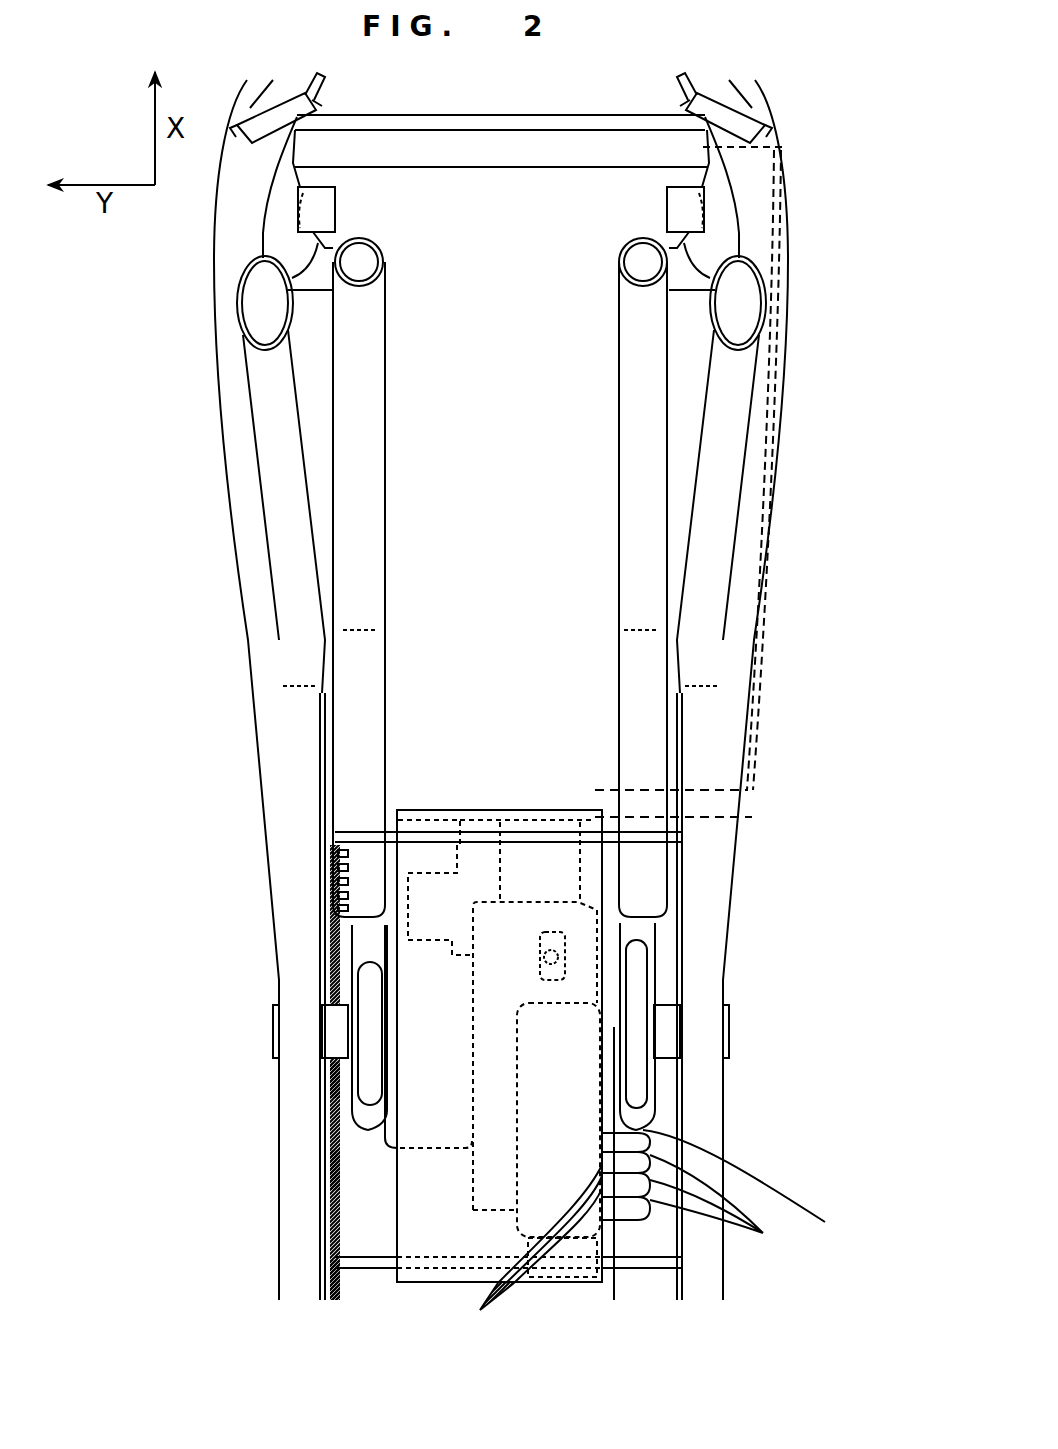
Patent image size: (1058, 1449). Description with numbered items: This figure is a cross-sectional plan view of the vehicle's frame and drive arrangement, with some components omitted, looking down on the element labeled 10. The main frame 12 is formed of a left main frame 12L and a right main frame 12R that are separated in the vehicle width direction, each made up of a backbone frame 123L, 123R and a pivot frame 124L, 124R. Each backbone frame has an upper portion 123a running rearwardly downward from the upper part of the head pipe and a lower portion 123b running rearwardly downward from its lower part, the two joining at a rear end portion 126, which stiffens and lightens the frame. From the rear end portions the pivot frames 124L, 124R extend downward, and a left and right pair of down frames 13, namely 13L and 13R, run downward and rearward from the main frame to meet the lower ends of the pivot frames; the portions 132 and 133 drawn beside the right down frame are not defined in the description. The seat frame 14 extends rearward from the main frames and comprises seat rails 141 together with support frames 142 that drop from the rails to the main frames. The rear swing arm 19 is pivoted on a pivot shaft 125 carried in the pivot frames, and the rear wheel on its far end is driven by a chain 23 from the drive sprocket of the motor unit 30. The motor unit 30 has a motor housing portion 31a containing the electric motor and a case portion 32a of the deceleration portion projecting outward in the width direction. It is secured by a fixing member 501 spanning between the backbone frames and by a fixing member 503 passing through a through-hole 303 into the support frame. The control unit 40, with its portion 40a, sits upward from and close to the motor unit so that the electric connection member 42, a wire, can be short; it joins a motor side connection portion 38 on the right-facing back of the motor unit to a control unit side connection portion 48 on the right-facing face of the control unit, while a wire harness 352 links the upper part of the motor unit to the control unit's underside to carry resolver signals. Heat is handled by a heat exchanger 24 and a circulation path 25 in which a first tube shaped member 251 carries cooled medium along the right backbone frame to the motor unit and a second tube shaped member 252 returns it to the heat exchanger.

The vehicle / steering device 10 is at (808, 140).
The main frame 12 is at (808, 302).
The main frame 12L is at (208, 304).
The main frame 12R is at (798, 377).
The down frames 13 is at (590, 577).
The down frame 13L is at (386, 340).
The down frame 13R is at (620, 340).
The seat frame 14 is at (421, 1072).
The rear swing arm 19 is at (332, 1168).
The chain 23 is at (330, 1288).
The heat exchanger 24 is at (525, 114).
The circulation path 25 is at (720, 483).
The motor unit 30 is at (566, 1004).
The motor housing portion 31a is at (492, 905).
The case portion 32a is at (423, 818).
The motor side connection portion 38 is at (728, 1184).
The control unit 40 is at (393, 1296).
The bracket bottom 40a is at (455, 1283).
The electric connection member 42 is at (723, 1202).
The control unit side connection portion 48 is at (480, 1310).
The backbone frame 123L is at (183, 468).
The backbone frame 123R is at (850, 430).
The upper portion 123a is at (255, 411).
The lower portion 123b is at (236, 527).
The pivot frame 124L is at (360, 1135).
The pivot frame 124R is at (665, 1147).
The pivot shaft 125 is at (618, 995).
The rear end portion 126 is at (272, 1030).
The shaft outer surface 132 is at (672, 421).
The shaft inner surface 133 is at (650, 540).
The seat rails 141 is at (270, 910).
The support frames 142 is at (325, 1080).
The first tube shaped member 251 is at (745, 636).
The second tube shaped member 252 is at (738, 675).
The through-hole 303 is at (560, 820).
The wire harness 352 is at (550, 950).
The fixing member 501 is at (610, 835).
The fixing member 503 is at (612, 1270).